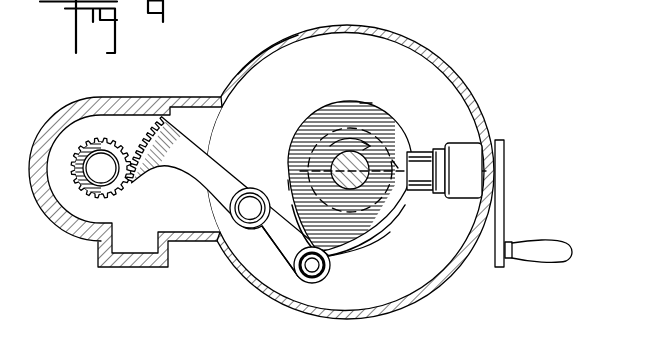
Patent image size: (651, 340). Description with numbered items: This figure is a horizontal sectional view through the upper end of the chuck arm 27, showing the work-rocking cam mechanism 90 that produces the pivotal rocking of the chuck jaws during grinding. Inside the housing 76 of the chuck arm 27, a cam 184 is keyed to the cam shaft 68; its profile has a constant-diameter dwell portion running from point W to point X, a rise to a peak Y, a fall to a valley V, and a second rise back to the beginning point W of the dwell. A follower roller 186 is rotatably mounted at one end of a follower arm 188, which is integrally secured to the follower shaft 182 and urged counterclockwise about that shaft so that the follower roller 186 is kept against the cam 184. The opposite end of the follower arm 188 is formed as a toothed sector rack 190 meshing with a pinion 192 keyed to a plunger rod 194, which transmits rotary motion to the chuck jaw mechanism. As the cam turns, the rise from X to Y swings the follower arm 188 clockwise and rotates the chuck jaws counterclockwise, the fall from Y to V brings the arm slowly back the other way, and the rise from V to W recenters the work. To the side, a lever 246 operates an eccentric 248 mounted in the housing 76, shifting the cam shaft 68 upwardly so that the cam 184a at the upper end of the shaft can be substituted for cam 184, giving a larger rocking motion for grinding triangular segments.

The chuck arm 27 is at (464, 46).
The housing 76 is at (280, 42).
The work-rocking cam mechanism 90 is at (306, 108).
The cam shaft 68 is at (349, 178).
The cam 184 is at (386, 216).
The cam 184a is at (368, 253).
The follower shaft 182 is at (250, 209).
The follower roller 186 is at (302, 279).
The follower arm 188 is at (268, 248).
The toothed sector rack 190 is at (176, 138).
The pinion 192 is at (99, 146).
The plunger rod 194 is at (102, 170).
The eccentric 248 is at (420, 160).
The lever 246 is at (538, 246).
The beginning point of dwell portion W is at (366, 103).
The valley V is at (397, 150).
The end point of dwell portion X is at (289, 185).
The peak Y is at (326, 254).